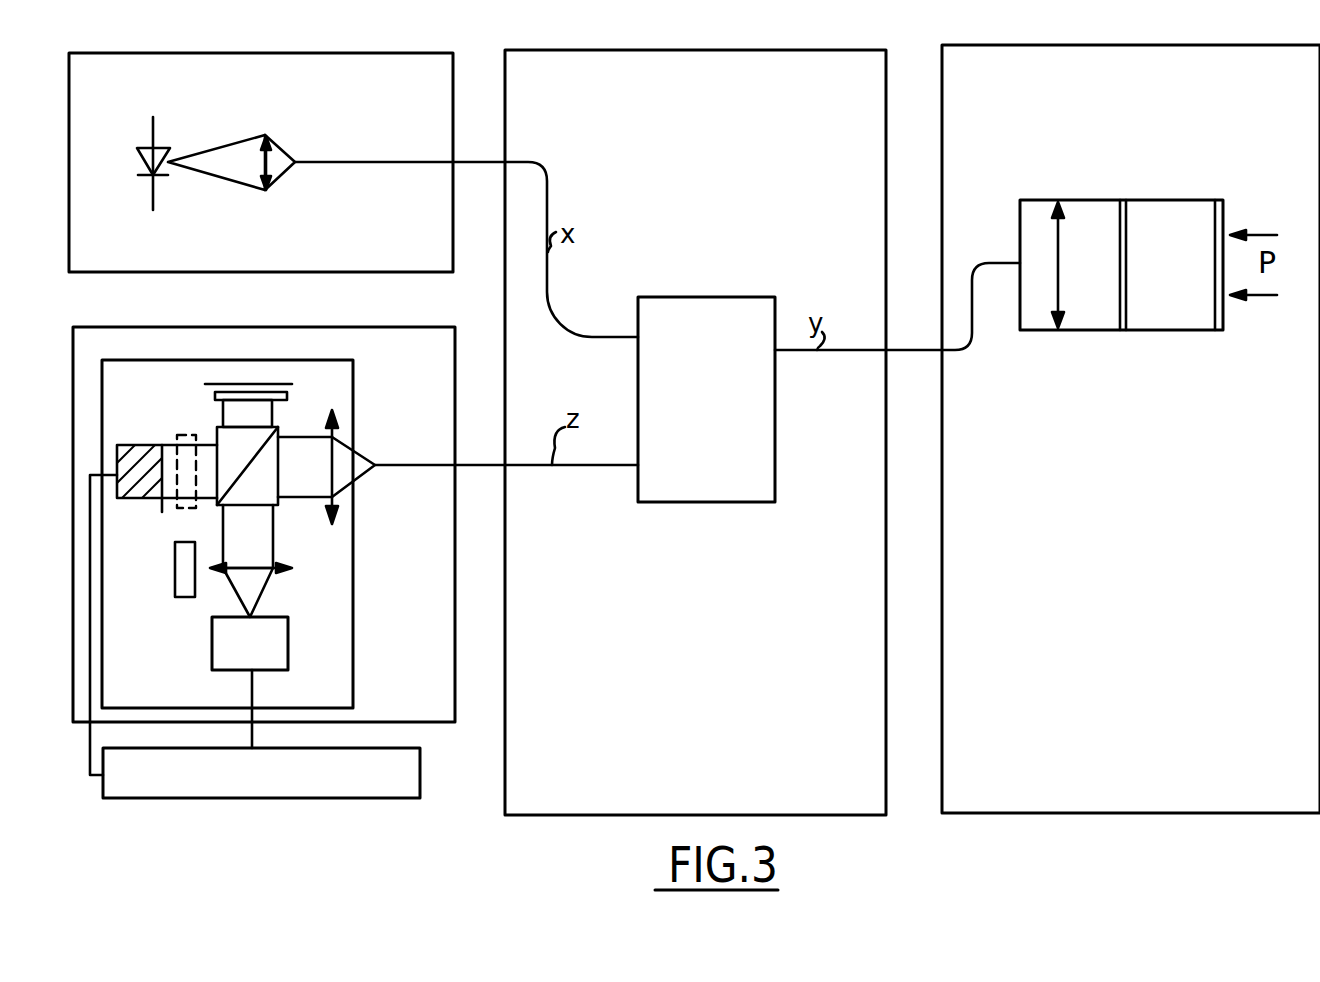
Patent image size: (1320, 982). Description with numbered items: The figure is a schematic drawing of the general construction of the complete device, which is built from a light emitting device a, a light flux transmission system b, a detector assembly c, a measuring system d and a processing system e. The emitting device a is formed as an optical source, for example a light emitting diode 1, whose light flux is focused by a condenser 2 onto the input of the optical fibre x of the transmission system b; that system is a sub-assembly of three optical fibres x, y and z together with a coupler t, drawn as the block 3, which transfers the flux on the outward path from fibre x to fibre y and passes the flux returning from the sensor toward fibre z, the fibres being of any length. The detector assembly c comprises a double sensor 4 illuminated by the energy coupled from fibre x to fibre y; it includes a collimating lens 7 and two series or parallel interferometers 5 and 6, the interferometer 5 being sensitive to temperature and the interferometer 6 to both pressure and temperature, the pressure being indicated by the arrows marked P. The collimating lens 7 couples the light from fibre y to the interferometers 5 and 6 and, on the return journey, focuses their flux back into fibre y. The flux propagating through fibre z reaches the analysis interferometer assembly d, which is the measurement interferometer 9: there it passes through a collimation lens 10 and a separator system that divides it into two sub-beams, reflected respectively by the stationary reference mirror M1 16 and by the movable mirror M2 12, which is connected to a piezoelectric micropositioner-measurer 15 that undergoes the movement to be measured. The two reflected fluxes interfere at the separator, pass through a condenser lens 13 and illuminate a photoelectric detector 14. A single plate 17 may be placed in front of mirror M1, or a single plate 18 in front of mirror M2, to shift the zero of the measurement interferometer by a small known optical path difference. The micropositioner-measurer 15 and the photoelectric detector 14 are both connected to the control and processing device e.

The light emitting diode 1 is at (156, 142).
The condenser 2 is at (271, 136).
The control/processing unit 3 is at (766, 297).
The double sensor 4 is at (1121, 243).
The interferometer 5 is at (1118, 262).
The interferometer 6 is at (1215, 250).
The collimating lens 7 is at (1057, 262).
The measurement interferometer 9 is at (353, 688).
The collimation lens 10 is at (328, 416).
The movable mirror M2 12 is at (162, 512).
The condenser lens 13 is at (316, 536).
The photoelectric detector 14 is at (288, 640).
The piezoelectric micropositioner-measurer 15 is at (133, 445).
The stationary reference mirror M1 16 is at (215, 386).
The plate 17 is at (196, 508).
The plate 18 is at (280, 400).
The light emitting device a is at (413, 52).
The light flux transmission system b is at (848, 52).
The detector assembly c is at (1250, 46).
The measuring system d is at (455, 327).
The processing system e is at (312, 798).
The stationary reference mirror M1 is at (281, 371).
The movable mirror M2 is at (151, 423).